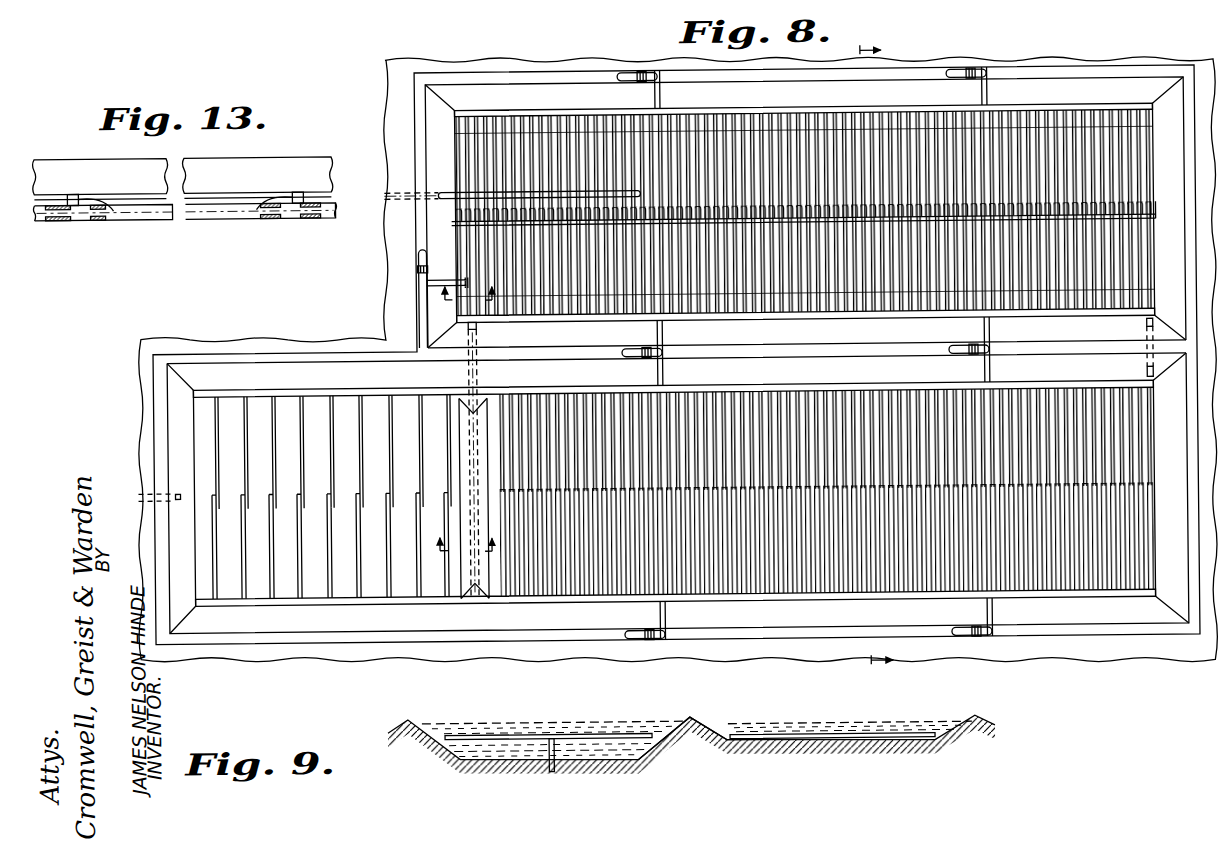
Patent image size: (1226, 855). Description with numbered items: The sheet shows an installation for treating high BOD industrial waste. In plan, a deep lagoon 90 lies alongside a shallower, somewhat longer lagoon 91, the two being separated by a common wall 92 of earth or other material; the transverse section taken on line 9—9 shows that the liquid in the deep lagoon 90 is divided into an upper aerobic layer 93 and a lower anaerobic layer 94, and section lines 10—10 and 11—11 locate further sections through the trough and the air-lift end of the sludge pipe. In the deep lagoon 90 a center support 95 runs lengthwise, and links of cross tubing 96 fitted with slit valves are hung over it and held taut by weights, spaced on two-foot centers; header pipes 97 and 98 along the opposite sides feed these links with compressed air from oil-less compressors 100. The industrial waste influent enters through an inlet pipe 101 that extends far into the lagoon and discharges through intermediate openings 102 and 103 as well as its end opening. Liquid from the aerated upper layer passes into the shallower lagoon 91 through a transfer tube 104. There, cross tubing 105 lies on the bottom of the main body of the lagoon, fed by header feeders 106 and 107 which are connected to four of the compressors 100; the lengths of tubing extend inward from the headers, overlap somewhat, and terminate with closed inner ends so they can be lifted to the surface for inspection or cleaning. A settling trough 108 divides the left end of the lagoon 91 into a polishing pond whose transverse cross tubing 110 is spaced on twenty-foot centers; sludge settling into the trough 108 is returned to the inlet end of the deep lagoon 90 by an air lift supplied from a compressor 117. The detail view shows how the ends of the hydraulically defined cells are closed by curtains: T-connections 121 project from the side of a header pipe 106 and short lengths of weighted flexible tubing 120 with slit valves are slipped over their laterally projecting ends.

In FIG. 8, the section line 9— 9 is at (885, 354).
In FIG. 8, the section line 10— 10 is at (466, 531).
In FIG. 8, the section line 11— 11 is at (465, 305).
In FIG. 8, the deep lagoon 90 is at (1068, 76).
In FIG. 8, the shallower lagoon 91 is at (1099, 644).
In FIG. 8, the common separating wall 92 is at (858, 354).
In FIG. 9, the common separating wall 92 is at (687, 718).
In FIG. 9, the upper aerobic layer 93 is at (494, 729).
In FIG. 9, the lower anaerobic layer 94 is at (450, 758).
In FIG. 8, the center support 95 is at (860, 209).
In FIG. 9, the center support 95 is at (548, 738).
In FIG. 8, the cross tubing 96 is at (1094, 124).
In FIG. 8, the header pipe 97 is at (720, 318).
In FIG. 9, the header pipe 97 is at (648, 735).
In FIG. 8, the header pipe 98 is at (792, 114).
In FIG. 9, the header pipe 98 is at (447, 733).
In FIG. 8, the oil-less compressors 100 is at (657, 72).
In FIG. 8, the inlet pipe 101 is at (442, 194).
In FIG. 8, the intermediate discharge opening 102 is at (500, 205).
In FIG. 8, the intermediate discharge opening 103 is at (574, 199).
In FIG. 8, the transfer tube 104 is at (1145, 330).
In FIG. 8, the cross tubing 105 is at (1067, 404).
In FIG. 8, the header feeder 106 is at (805, 387).
In FIG. 13, the header feeder 106 is at (278, 157).
In FIG. 8, the header feeder 107 is at (770, 601).
In FIG. 8, the settling trough 108 is at (482, 408).
In FIG. 8, the cross tubing 110 is at (214, 415).
In FIG. 8, the compressor 117 is at (419, 279).
In FIG. 13, the weighted flexible tubing 120 is at (165, 214).
In FIG. 13, the T-connections 121 is at (115, 205).